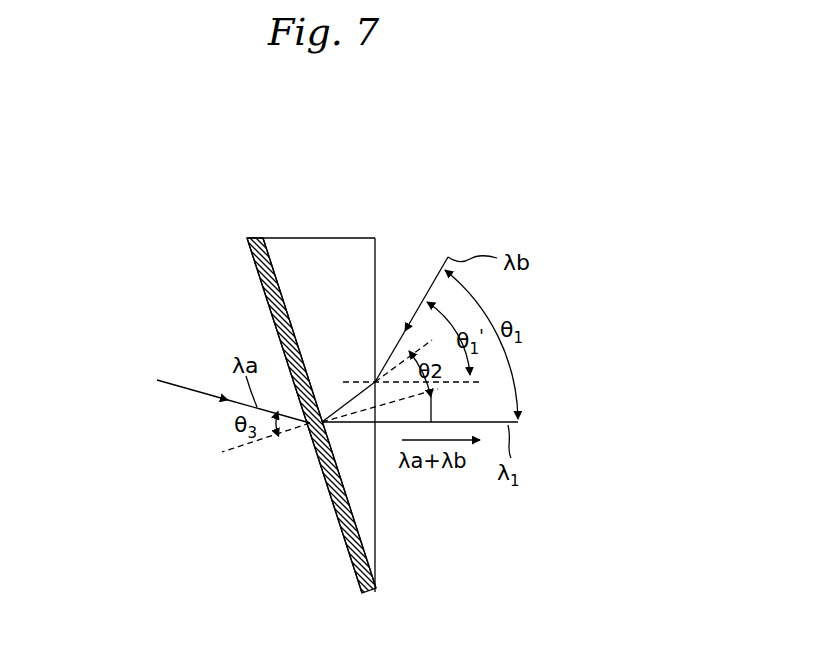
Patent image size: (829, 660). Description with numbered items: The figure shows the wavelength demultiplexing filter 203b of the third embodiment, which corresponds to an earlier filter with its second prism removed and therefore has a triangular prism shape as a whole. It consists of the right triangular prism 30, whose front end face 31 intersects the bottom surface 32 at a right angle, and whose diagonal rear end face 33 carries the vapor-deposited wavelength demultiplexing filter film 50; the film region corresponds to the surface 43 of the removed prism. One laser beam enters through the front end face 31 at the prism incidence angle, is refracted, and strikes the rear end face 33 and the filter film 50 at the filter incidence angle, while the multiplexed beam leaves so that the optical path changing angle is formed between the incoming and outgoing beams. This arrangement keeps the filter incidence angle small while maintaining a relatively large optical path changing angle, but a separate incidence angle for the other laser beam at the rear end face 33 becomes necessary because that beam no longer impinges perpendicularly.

The wavelength demultiplexing filter 203b is at (122, 200).
The triangular prism 30 is at (364, 268).
The front end face 31 is at (377, 248).
The bottom surface 32 is at (363, 242).
The rear end face 33 is at (269, 262).
The wavelength demultiplexing filter film 50 is at (260, 239).
The surface of the triangular prism 43 is at (263, 296).